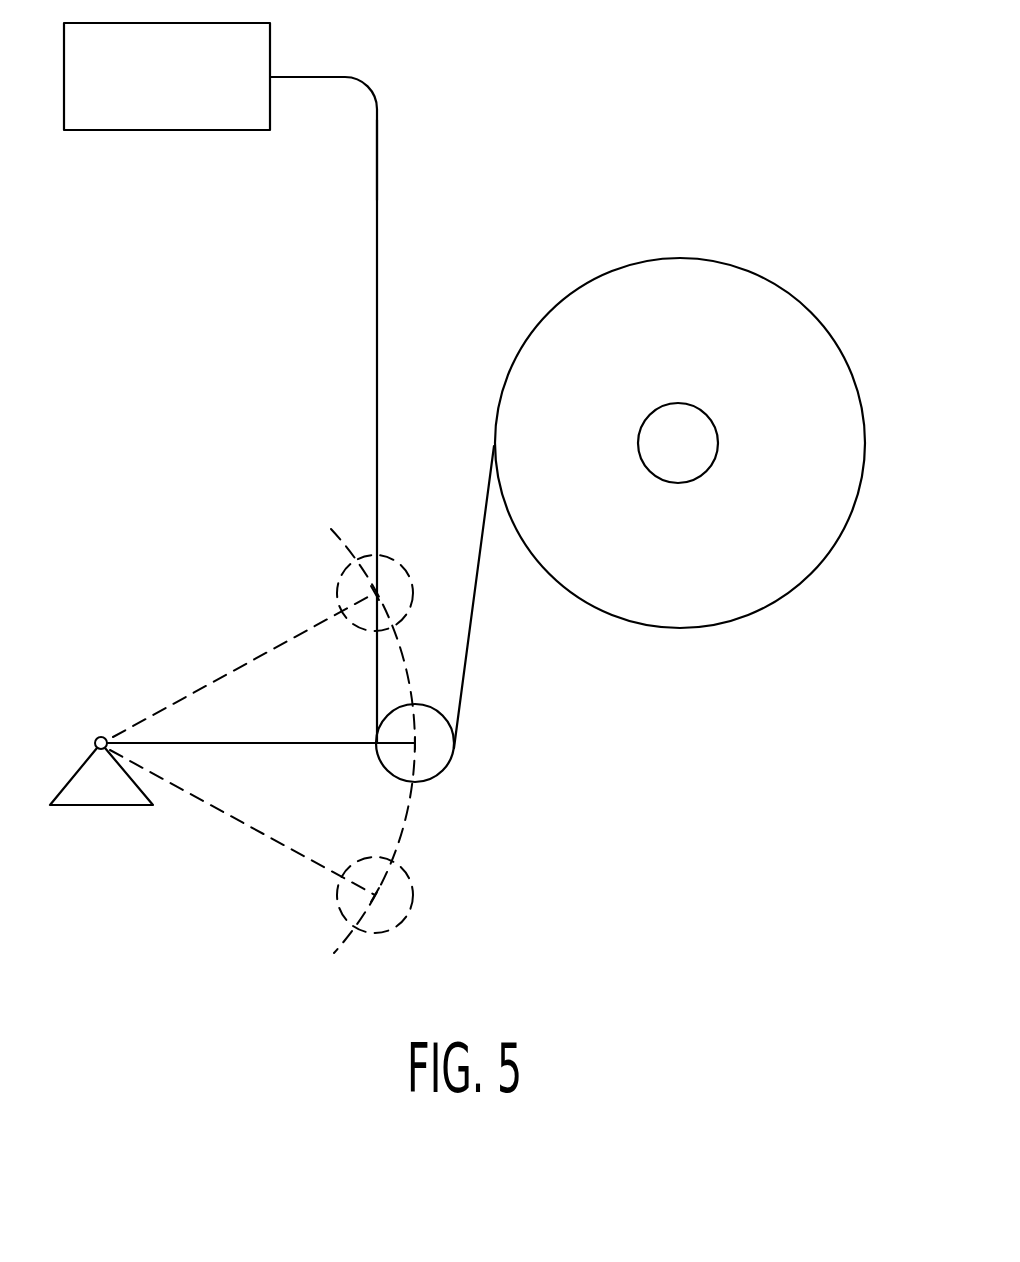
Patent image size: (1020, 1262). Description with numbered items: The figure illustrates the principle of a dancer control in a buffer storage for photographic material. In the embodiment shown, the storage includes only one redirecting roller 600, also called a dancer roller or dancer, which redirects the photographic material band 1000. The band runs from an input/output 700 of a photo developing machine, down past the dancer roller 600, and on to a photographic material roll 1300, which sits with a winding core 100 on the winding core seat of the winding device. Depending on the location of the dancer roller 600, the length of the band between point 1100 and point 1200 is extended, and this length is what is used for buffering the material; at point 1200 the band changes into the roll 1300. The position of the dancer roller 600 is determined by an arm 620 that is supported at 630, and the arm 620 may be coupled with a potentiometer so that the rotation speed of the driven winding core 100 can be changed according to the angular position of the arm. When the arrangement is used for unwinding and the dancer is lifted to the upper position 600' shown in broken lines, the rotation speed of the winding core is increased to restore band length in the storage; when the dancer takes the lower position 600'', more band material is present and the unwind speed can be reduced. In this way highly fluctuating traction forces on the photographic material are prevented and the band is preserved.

The input/output 700 is at (190, 117).
The photographic material band 1000 is at (376, 280).
The point 1100 is at (380, 160).
The point 1200 is at (492, 446).
The photographic material roll 1300 is at (683, 278).
The winding core 100 is at (708, 412).
The redirecting roller 600 is at (461, 757).
The upper position 600' is at (284, 600).
The lower position 600'' is at (324, 741).
The arm 620 is at (302, 742).
The support 630 is at (96, 742).